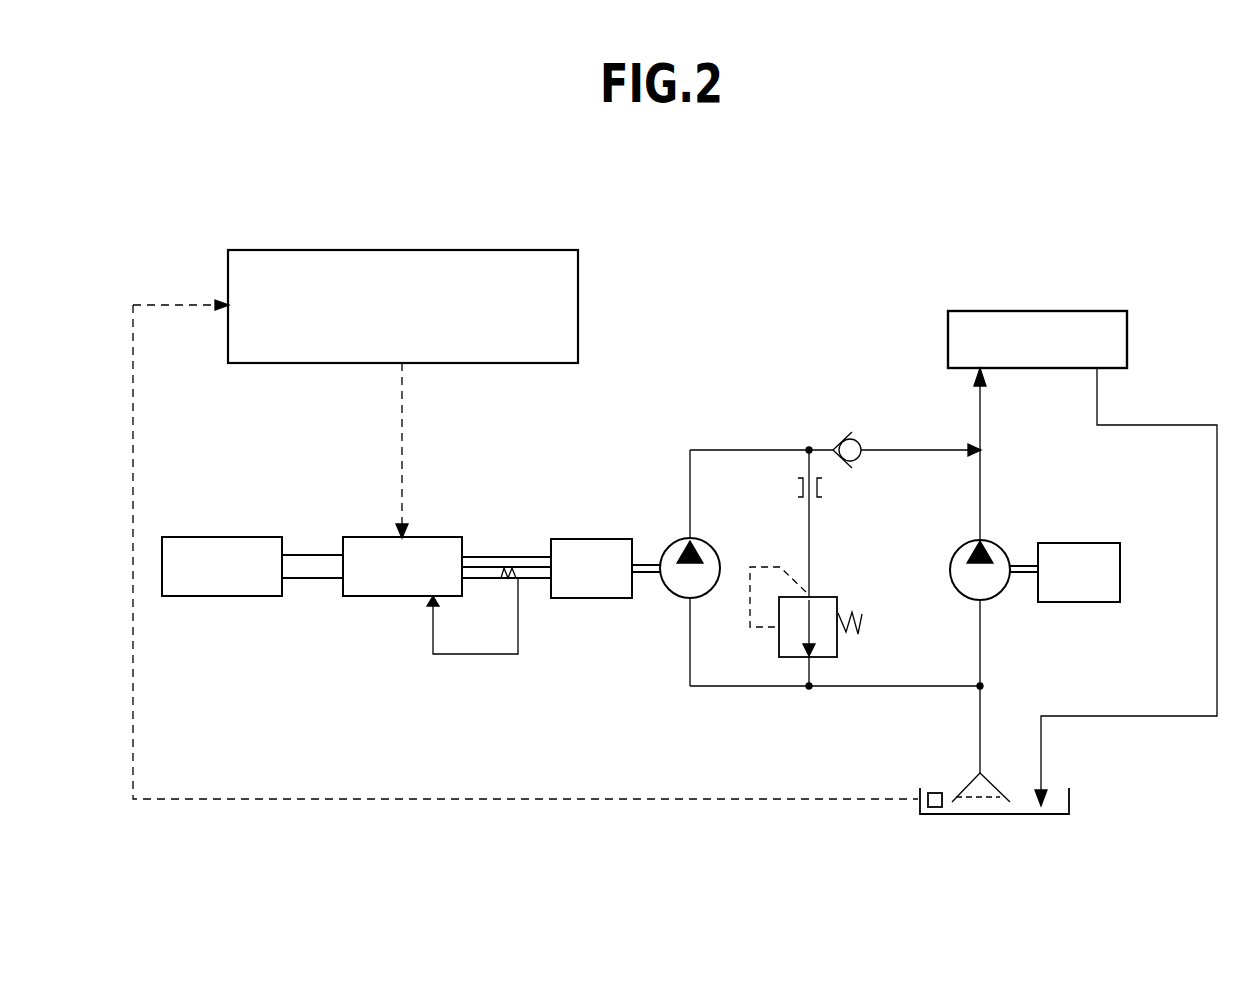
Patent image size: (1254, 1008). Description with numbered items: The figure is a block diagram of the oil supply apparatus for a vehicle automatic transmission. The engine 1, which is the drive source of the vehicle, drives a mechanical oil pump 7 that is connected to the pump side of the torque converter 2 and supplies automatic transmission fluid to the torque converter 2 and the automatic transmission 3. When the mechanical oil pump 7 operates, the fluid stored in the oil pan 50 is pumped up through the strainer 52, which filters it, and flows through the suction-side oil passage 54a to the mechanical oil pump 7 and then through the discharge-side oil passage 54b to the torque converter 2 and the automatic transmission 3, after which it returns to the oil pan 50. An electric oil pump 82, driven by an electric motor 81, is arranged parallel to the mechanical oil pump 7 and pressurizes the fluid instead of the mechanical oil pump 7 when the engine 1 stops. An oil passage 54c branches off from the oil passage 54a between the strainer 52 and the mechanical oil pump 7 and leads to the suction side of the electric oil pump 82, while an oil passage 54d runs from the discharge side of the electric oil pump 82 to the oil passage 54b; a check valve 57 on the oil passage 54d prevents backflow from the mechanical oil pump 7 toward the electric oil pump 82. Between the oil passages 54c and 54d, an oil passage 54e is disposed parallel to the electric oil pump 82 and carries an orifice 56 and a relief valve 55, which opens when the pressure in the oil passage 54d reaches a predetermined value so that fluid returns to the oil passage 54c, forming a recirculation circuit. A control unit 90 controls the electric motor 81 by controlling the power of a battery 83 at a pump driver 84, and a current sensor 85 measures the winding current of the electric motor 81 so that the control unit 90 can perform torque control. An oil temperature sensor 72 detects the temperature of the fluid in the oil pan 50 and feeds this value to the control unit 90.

The engine 1 is at (1082, 543).
The torque converter 2 is at (1038, 311).
The automatic transmission 3 is at (1037, 339).
The mechanical oil pump 7 is at (1000, 597).
The oil pan 50 is at (1071, 803).
The strainer 52 is at (1000, 782).
The oil passage 54a is at (978, 730).
The oil passage 54b is at (982, 485).
The oil passage 54c is at (853, 688).
The oil passage 54d is at (750, 450).
The oil passage 54e is at (811, 530).
The relief valve 55 is at (838, 603).
The orifice 56 is at (798, 489).
The check valve 57 is at (857, 440).
The oil temperature sensor 72 is at (937, 808).
The electric motor 81 is at (593, 539).
The electric oil pump 82 is at (672, 598).
The battery 83 is at (222, 598).
The pump driver 84 is at (388, 598).
The current sensor 85 is at (500, 590).
The control unit 90 is at (400, 250).